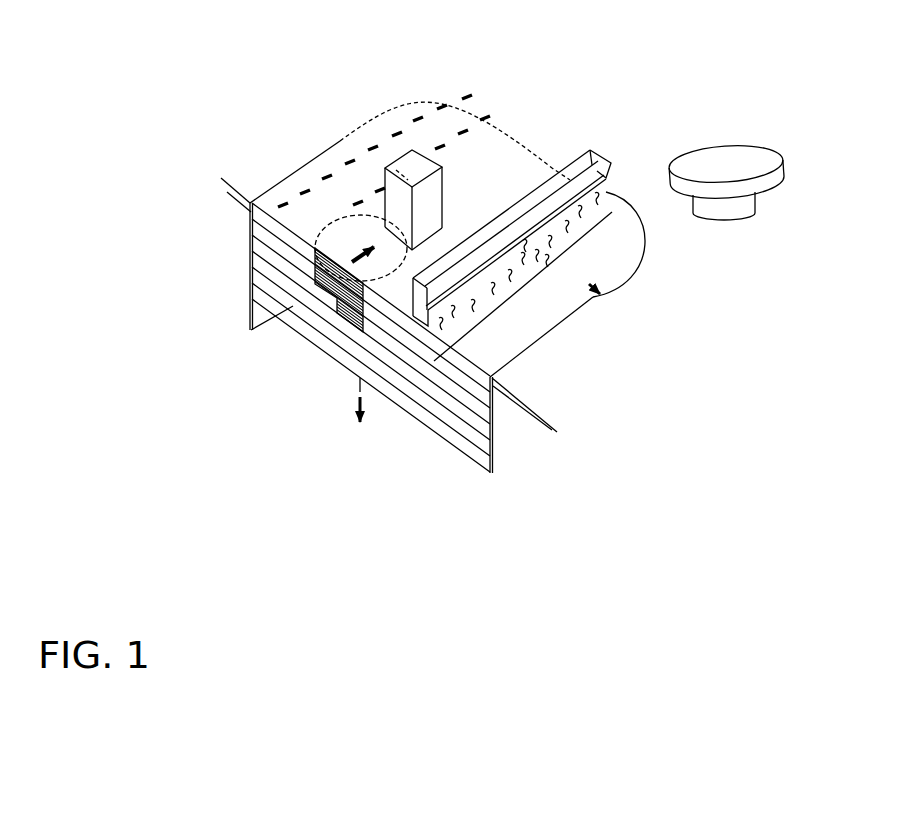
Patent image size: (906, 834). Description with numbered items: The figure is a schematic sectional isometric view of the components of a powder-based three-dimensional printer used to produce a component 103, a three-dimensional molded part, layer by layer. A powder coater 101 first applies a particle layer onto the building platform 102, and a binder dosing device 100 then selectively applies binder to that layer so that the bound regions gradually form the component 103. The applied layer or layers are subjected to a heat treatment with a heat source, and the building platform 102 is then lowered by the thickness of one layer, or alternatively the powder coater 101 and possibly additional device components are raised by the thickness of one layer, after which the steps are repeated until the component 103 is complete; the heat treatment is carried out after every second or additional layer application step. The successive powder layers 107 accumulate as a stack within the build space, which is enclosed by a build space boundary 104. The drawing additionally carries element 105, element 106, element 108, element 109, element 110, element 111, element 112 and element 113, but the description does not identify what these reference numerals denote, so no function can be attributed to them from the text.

The binder dosing device 100 is at (432, 212).
The powder coater 101 is at (551, 196).
The building platform 102 is at (297, 316).
The component 103 is at (341, 238).
The build space boundary 104 is at (249, 258).
The dome region 105 is at (394, 134).
The rounded side face 106 is at (567, 278).
The powder layers 107 is at (496, 424).
The downward motion arrow 108 is at (355, 406).
The hatched slot 109 is at (340, 322).
The channel 110 is at (598, 192).
The top face edge 111 is at (344, 138).
The lower side edge 112 is at (456, 339).
The channel end 113 is at (421, 318).